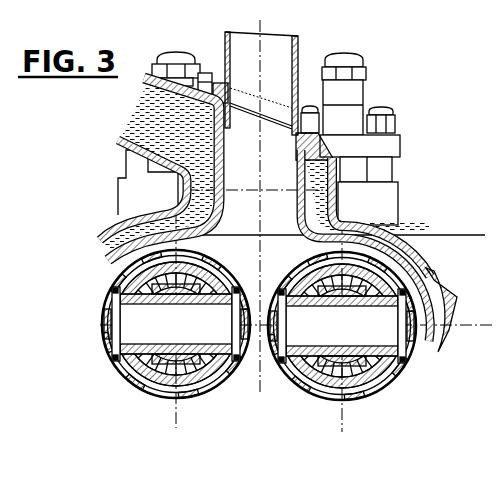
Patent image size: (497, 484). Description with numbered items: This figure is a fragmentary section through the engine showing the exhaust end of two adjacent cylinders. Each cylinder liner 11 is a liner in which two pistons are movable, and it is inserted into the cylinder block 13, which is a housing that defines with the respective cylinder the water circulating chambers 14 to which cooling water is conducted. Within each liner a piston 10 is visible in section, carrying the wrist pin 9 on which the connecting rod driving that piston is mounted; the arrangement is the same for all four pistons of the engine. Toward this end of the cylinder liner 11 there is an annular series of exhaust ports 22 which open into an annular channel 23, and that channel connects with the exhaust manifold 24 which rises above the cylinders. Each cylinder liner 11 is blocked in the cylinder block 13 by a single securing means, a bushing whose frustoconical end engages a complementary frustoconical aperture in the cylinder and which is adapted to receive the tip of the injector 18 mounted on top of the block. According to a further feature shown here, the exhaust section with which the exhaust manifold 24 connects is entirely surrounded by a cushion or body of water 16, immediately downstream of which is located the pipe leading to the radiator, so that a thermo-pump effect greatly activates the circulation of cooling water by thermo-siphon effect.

The wrist pin 9 is at (140, 292).
The piston 10 is at (205, 388).
The cylinder liner 11 is at (135, 390).
The cylinder block 13 is at (413, 262).
The water circulating chamber 14 is at (441, 268).
The body of water 16 is at (203, 182).
The injector 18 is at (348, 88).
The exhaust ports 22 is at (160, 250).
The annular channel 23 is at (297, 252).
The exhaust manifold 24 is at (282, 85).